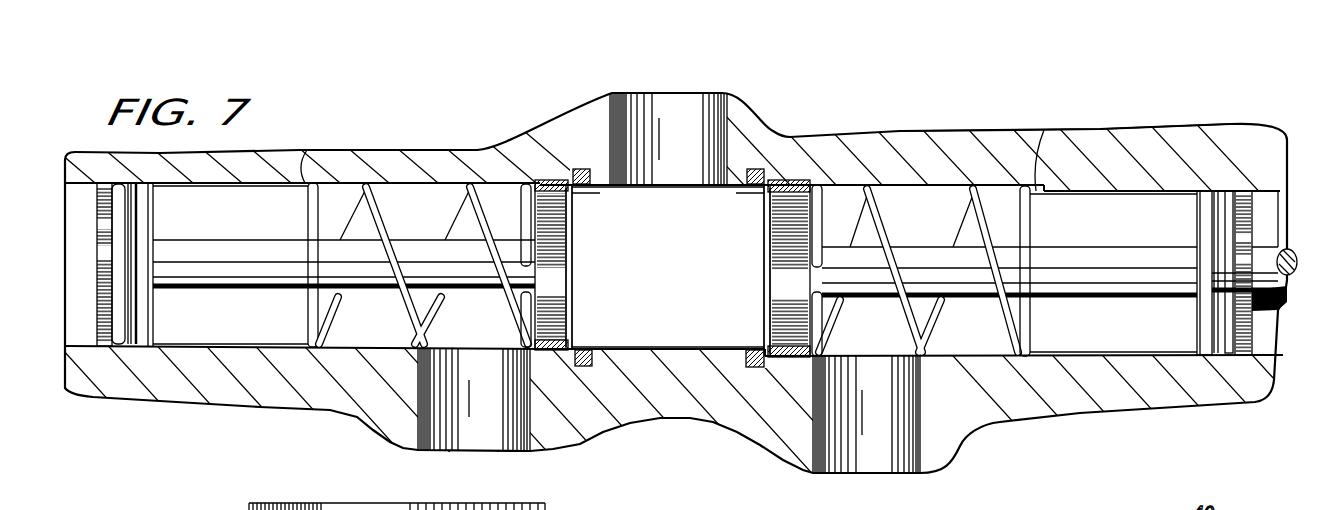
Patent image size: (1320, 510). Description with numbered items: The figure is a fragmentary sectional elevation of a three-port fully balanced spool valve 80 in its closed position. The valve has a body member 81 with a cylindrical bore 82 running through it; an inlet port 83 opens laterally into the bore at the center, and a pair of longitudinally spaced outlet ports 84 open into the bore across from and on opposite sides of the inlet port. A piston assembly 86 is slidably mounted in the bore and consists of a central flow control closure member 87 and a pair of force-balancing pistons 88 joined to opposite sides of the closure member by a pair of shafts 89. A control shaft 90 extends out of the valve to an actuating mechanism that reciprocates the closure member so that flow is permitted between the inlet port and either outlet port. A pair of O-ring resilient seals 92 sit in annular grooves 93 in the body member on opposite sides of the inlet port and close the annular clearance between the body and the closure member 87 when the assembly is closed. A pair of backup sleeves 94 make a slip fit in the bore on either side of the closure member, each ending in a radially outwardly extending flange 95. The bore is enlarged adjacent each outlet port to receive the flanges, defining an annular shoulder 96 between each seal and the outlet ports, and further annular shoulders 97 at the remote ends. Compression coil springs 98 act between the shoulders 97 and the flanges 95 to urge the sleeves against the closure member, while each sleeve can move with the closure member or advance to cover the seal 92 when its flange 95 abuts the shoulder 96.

The three-port fully balanced spool valve 80 is at (876, 121).
The body member 81 is at (1027, 128).
The cylindrical bore 82 is at (232, 216).
The inlet port 83 is at (693, 103).
The outlet ports 84 is at (428, 452).
The piston assembly 86 is at (433, 239).
The central flow control closure member 87 is at (682, 274).
The force-balancing pistons 88 is at (140, 217).
The shafts 89 is at (217, 290).
The control shaft 90 is at (1287, 297).
The O-ring resilient seals 92 is at (587, 345).
The annular grooves 93 is at (545, 182).
The backup elements or sleeves 94 is at (553, 208).
The flange 95 is at (823, 185).
The annular shoulder 96 is at (573, 194).
The annular shoulders 97 is at (306, 150).
The compression coil springs 98 is at (313, 310).